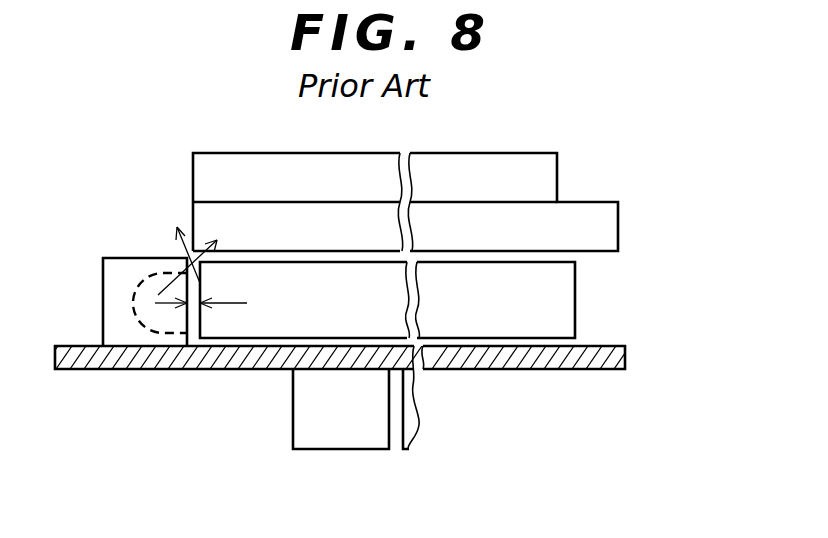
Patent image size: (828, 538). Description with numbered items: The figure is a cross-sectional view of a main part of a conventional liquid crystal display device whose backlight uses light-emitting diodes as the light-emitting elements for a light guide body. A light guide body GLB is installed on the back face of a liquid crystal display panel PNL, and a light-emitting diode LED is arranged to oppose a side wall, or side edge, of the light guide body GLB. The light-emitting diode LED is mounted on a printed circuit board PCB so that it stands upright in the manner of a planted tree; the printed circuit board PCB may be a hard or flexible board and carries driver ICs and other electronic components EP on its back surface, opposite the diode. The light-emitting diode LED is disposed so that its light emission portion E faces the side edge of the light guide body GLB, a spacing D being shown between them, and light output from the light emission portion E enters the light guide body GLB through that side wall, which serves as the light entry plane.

The liquid crystal display panel PNL is at (218, 152).
The light guide body GLB is at (567, 303).
The light-emitting diode LED is at (118, 268).
The light emission portion E is at (165, 285).
The gap distance D is at (212, 304).
The printed circuit board PCB is at (537, 362).
The electronic part EP is at (323, 440).